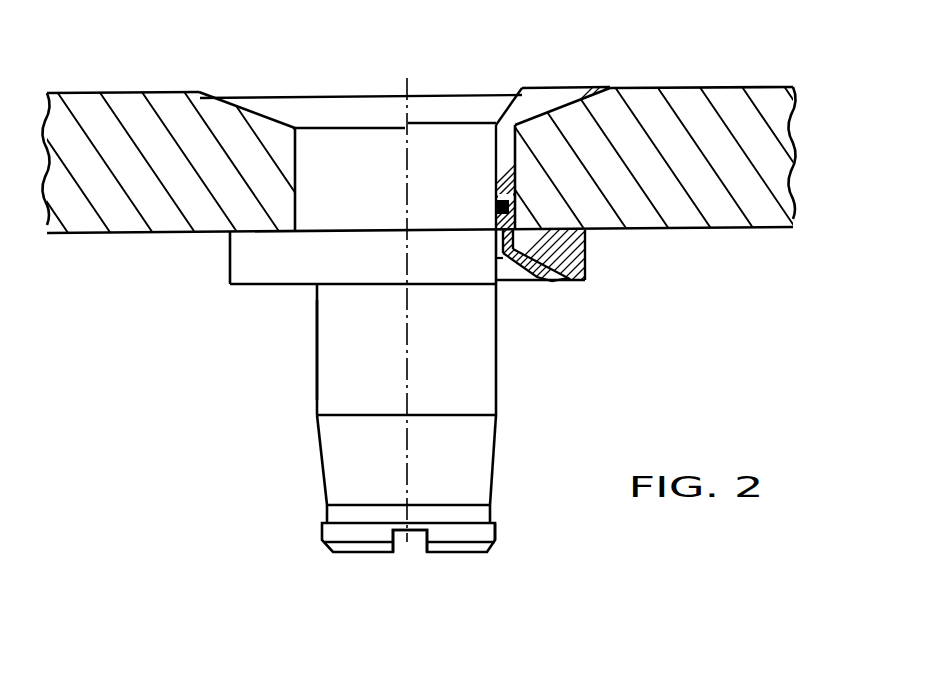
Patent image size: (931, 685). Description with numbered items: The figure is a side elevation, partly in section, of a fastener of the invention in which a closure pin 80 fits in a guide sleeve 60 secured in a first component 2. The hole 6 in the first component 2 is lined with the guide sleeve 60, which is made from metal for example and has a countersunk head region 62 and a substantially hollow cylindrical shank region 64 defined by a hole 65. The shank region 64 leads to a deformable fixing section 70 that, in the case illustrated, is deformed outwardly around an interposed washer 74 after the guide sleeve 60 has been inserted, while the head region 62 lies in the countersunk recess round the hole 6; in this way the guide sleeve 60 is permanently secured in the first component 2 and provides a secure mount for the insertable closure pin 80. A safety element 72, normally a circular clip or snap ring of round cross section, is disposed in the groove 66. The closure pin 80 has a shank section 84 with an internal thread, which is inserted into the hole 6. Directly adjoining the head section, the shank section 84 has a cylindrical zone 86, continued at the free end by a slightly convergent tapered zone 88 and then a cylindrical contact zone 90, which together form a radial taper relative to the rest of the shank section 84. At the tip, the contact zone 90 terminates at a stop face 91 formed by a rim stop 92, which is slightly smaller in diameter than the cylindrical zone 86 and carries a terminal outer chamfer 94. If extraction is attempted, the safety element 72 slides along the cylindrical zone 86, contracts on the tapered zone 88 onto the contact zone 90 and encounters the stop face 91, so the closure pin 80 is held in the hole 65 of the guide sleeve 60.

The first component 2 is at (113, 107).
The hole 6 is at (297, 188).
The guide sleeve 60 is at (560, 171).
The countersunk head region 62 is at (322, 107).
The hollow cylindrical shank region 64 is at (495, 166).
The hole 65 is at (490, 137).
The groove 66 is at (497, 200).
The deformable fixing section 70 is at (535, 273).
The safety element 72 is at (495, 210).
The washer 74 is at (585, 262).
The closure pin 80 is at (414, 415).
The shank section 84 is at (312, 387).
The cylindrical zone 86 is at (316, 328).
The tapered zone 88 is at (332, 467).
The contact zone 90 is at (337, 515).
The stop face 91 is at (493, 518).
The rim stop 92 is at (335, 532).
The terminal outer chamfer 94 is at (377, 547).